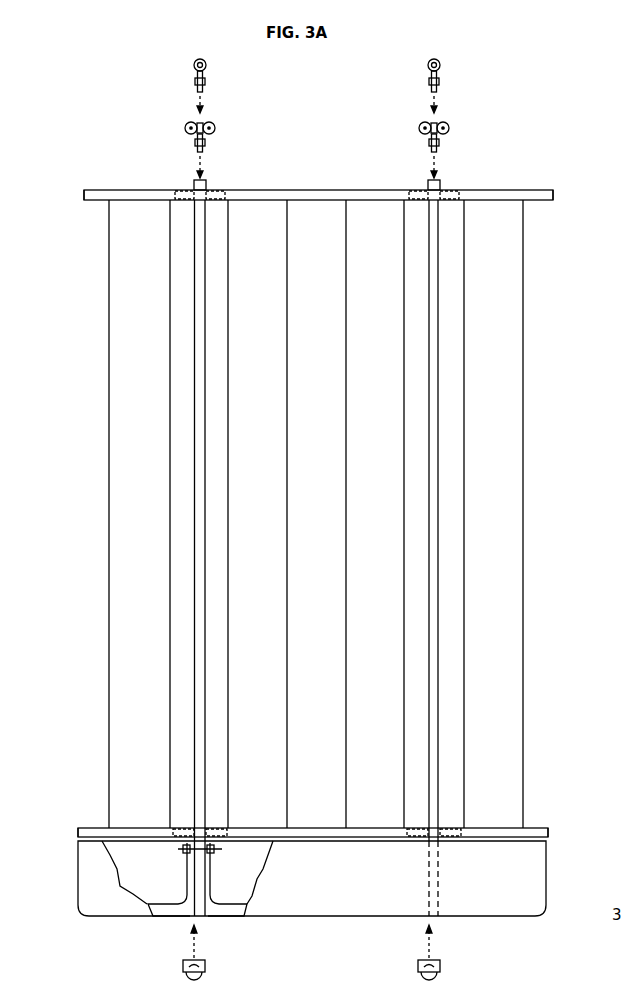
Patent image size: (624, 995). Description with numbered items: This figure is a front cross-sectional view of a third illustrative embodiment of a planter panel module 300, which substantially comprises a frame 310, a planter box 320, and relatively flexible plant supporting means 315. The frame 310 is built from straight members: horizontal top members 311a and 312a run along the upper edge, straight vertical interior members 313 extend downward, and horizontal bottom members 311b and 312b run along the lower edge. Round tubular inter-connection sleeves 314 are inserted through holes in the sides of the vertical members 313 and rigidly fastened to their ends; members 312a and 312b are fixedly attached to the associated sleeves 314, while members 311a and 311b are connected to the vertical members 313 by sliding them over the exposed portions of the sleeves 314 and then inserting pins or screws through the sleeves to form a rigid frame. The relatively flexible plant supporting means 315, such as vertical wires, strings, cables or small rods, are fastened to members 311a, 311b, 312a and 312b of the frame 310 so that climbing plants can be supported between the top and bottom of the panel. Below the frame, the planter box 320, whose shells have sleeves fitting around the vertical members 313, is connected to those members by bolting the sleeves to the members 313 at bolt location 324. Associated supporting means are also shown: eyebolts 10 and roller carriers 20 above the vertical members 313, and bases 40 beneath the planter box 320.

The eyebolt 10 is at (207, 82).
The roller carrier 20 is at (210, 135).
The base 40 is at (258, 980).
The planter panel module 300 is at (310, 536).
The frame 310 is at (310, 201).
The horizontal top member 311a is at (292, 202).
The horizontal bottom member 311b is at (305, 828).
The horizontal top member 312a is at (98, 202).
The horizontal bottom member 312b is at (98, 830).
The vertical interior member 313 is at (199, 386).
The inter-connection sleeve 314 is at (212, 190).
The relatively flexible plant supporting means 315 is at (108, 596).
The planter box 320 is at (528, 895).
The bolt location 324 is at (222, 851).